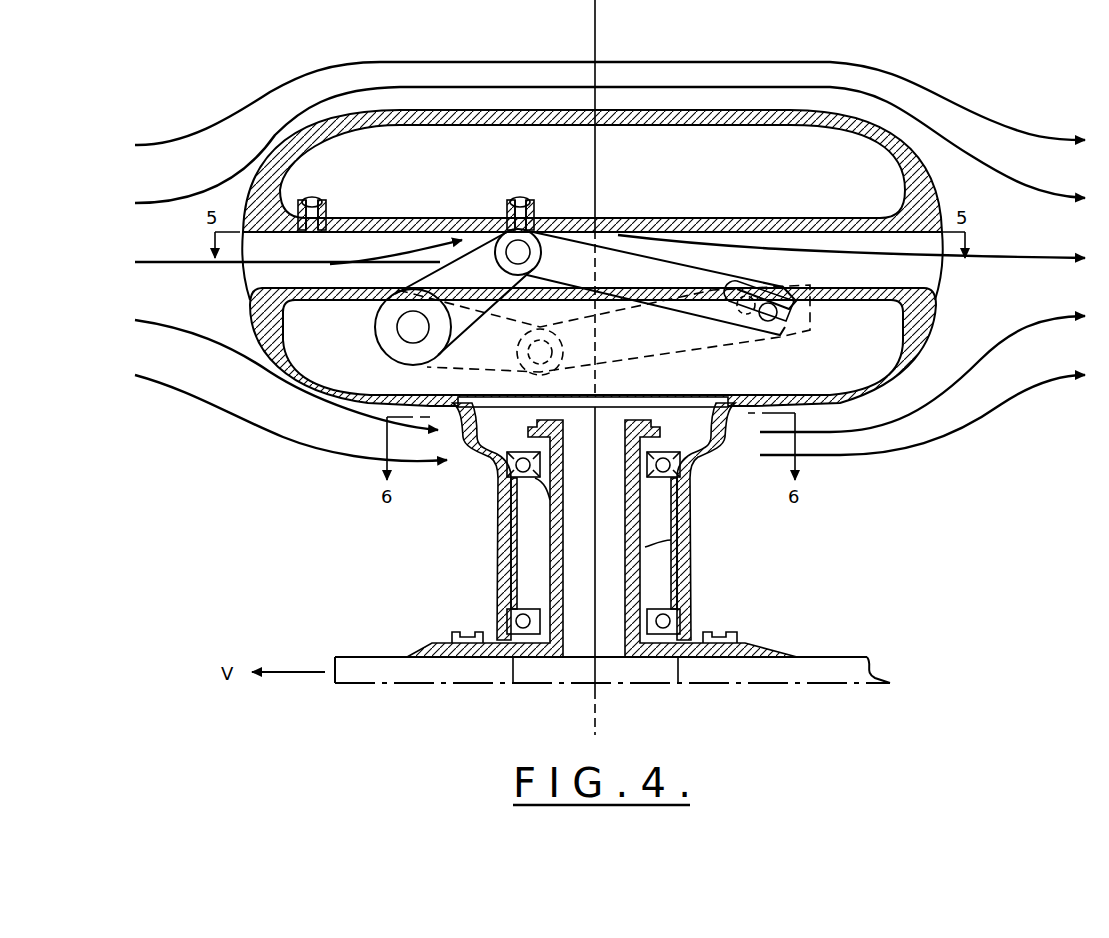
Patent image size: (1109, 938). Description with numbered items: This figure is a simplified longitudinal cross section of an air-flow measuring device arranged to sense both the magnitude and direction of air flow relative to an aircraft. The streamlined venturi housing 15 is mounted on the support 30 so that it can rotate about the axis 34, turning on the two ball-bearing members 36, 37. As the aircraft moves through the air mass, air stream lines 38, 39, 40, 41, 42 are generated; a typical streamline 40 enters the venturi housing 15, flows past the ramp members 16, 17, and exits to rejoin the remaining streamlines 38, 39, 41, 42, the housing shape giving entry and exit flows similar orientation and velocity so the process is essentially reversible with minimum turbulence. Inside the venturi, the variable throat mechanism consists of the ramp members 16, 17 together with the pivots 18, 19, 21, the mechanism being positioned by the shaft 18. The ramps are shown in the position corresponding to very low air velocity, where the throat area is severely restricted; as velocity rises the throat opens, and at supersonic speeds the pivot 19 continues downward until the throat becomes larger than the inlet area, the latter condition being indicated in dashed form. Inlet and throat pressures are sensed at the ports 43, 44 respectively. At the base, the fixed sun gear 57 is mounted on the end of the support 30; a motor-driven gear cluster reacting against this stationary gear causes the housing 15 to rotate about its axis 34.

The venturi housing 15 is at (702, 107).
The ramp member 16 is at (508, 288).
The ramp member 17 is at (657, 245).
The pivot 18 is at (386, 330).
The pivot 19 is at (506, 232).
The pivot 21 is at (780, 313).
The support 30 is at (677, 533).
The axis 34 is at (600, 705).
The ball-bearing member 36 is at (512, 508).
The ball-bearing member 37 is at (512, 596).
The air stream line 38 is at (172, 143).
The air stream line 39 is at (172, 201).
The air stream line 40 is at (172, 261).
The air stream line 41 is at (172, 320).
The air stream line 42 is at (172, 375).
The port 43 is at (318, 203).
The port 44 is at (526, 203).
The sun gear 57 is at (664, 430).